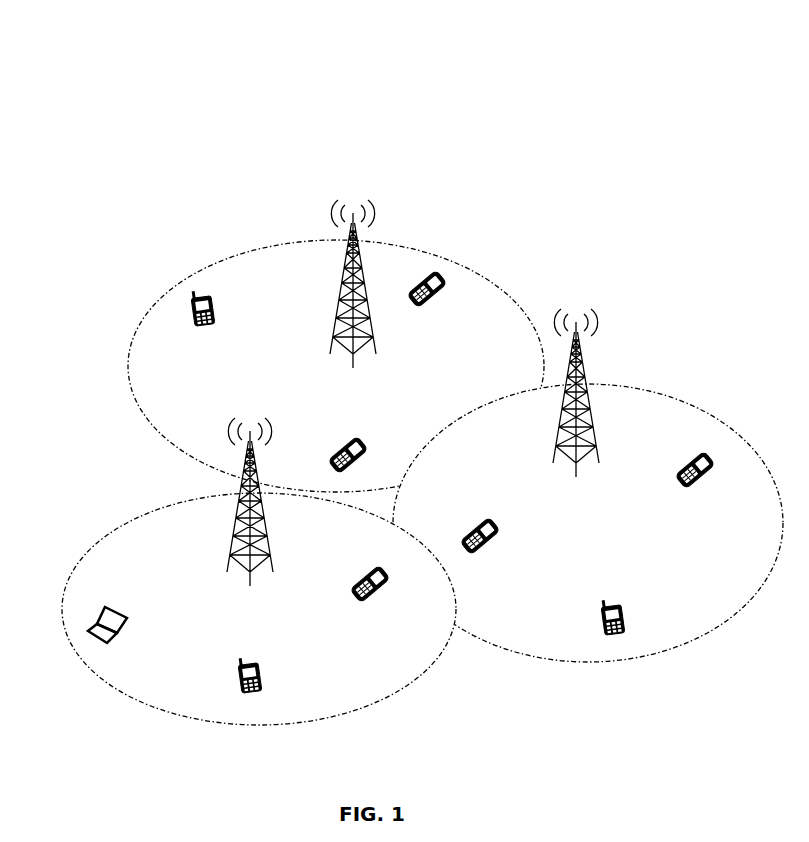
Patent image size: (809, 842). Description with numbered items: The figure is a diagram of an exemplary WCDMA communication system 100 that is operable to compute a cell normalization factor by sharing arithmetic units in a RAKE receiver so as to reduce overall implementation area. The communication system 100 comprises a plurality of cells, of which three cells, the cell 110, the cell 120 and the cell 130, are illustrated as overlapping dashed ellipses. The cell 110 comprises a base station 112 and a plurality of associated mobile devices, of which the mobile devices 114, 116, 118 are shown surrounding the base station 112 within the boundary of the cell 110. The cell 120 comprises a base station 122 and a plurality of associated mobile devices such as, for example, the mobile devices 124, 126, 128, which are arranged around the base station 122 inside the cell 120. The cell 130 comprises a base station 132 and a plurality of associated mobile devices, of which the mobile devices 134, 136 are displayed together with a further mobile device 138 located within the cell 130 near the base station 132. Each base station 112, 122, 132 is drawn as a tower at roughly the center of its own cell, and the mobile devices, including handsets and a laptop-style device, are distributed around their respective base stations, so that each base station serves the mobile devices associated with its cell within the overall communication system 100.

The communication system 100 is at (103, 98).
The cell 110 is at (438, 255).
The base station 112 is at (372, 228).
The mobile device 114 is at (436, 297).
The mobile device 116 is at (359, 466).
The mobile device 118 is at (214, 306).
The cell 120 is at (692, 404).
The base station 122 is at (598, 313).
The mobile device 124 is at (702, 486).
The mobile device 126 is at (626, 612).
The mobile device 128 is at (494, 545).
The cell 130 is at (117, 530).
The base station 132 is at (273, 423).
The mobile device 134 is at (127, 618).
The mobile device 136 is at (381, 598).
The mobile device 138 is at (263, 668).